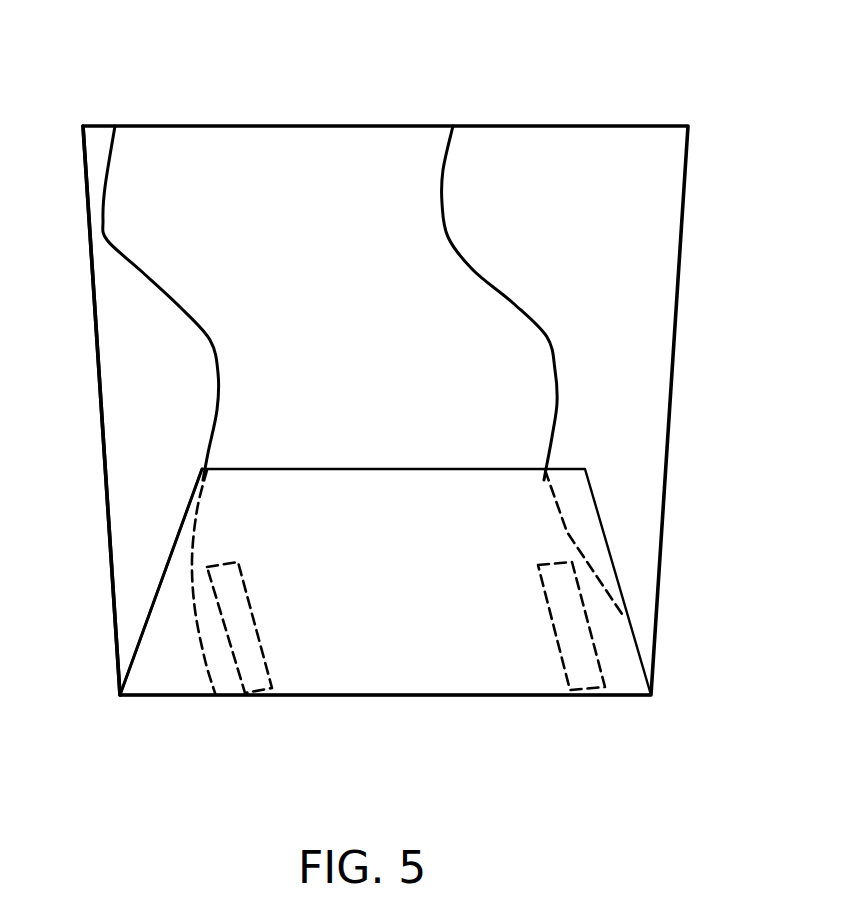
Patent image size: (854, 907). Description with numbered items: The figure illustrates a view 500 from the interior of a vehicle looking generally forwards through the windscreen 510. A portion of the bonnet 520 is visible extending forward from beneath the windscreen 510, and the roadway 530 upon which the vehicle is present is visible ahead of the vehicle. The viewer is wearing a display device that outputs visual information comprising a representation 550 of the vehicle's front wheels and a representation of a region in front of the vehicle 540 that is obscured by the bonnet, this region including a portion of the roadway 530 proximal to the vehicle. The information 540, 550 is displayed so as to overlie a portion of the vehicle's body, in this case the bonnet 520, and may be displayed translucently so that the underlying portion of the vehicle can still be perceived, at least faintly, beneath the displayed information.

The view 500 is at (156, 104).
The windscreen 510 is at (100, 377).
The bonnet 520 is at (394, 640).
The roadway 530 is at (394, 155).
The representation of a region in front of the vehicle 540 is at (567, 530).
The representation of the front wheels 550 is at (252, 662).